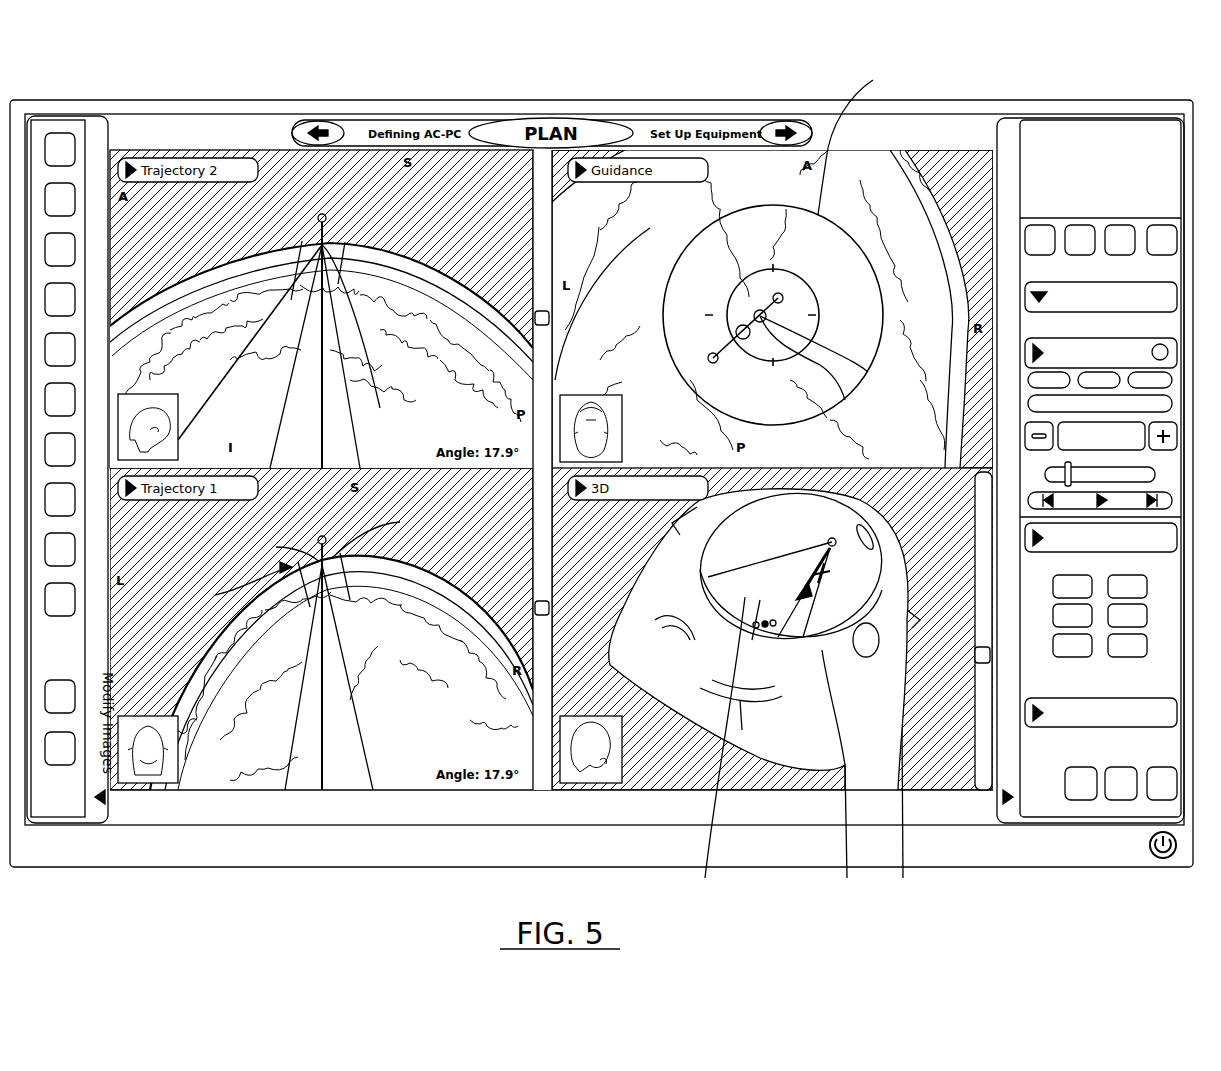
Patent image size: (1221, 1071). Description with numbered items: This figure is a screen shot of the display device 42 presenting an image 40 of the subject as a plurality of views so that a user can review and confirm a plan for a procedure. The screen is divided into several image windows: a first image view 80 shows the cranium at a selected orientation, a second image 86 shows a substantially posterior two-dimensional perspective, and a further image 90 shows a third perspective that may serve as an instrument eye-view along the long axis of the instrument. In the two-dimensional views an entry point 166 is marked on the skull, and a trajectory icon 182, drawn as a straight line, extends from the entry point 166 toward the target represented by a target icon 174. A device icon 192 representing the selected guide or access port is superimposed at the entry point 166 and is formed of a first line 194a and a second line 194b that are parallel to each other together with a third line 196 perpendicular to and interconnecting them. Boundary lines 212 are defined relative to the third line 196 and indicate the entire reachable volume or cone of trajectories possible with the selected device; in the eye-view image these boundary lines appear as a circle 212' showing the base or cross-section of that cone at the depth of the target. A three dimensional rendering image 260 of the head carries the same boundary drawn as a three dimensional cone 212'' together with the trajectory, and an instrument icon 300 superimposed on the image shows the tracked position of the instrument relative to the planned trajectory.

The image 40 is at (152, 130).
The display device 42 is at (479, 82).
The first image view 80 is at (224, 142).
The second image 86 is at (208, 800).
The image at third perspective 90 is at (930, 142).
The entry point 166 is at (547, 440).
The target icon 174 is at (712, 363).
The trajectory icon 182 is at (322, 432).
The device icon 192 is at (234, 585).
The first line 194a is at (312, 244).
The second line 194b is at (333, 246).
The third line 196 is at (322, 240).
The boundary lines 212 is at (320, 577).
The circle 212' is at (871, 144).
The three dimensional cone boundary 212'' is at (716, 753).
The three dimensional rendering image 260 is at (803, 600).
The instrument icon 300 is at (847, 837).